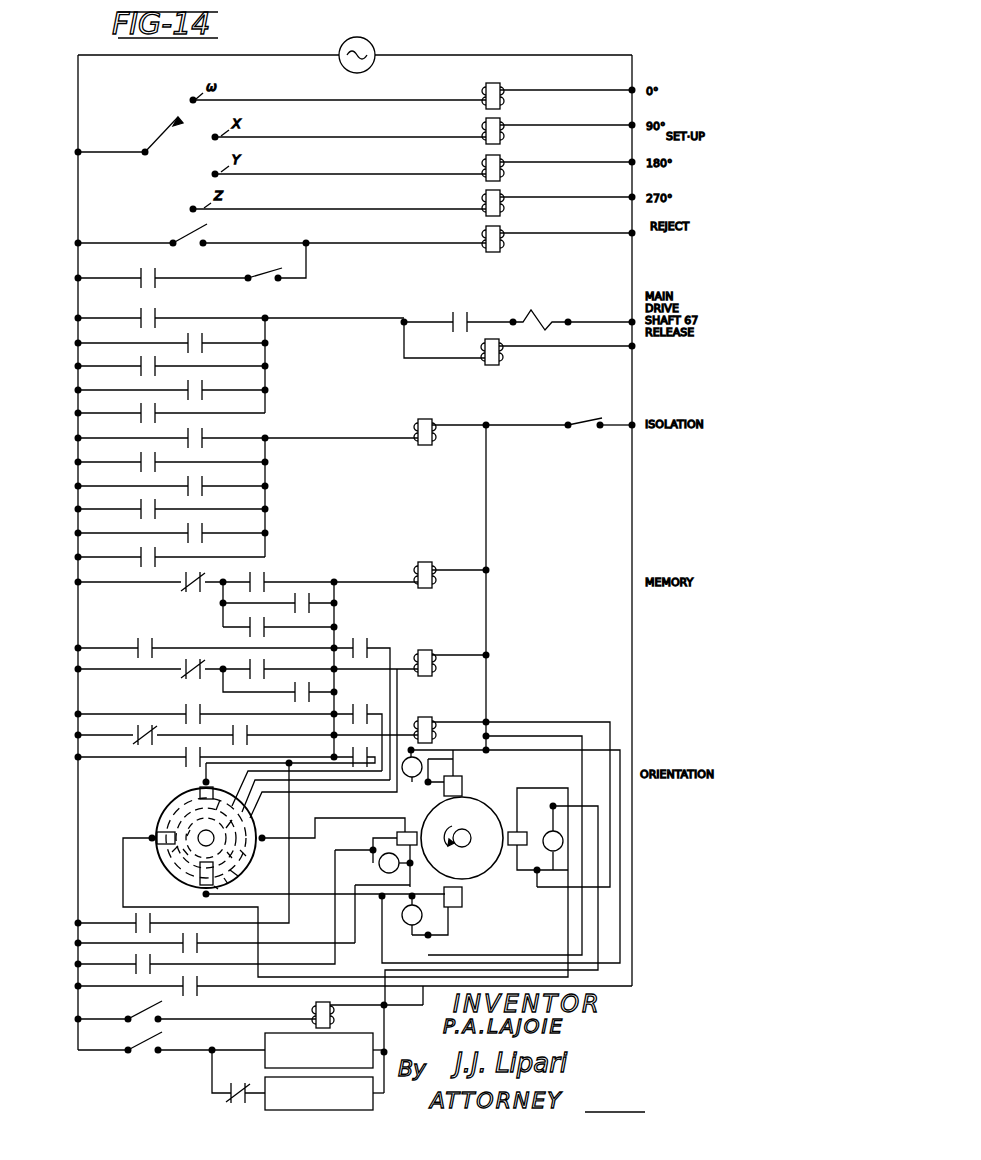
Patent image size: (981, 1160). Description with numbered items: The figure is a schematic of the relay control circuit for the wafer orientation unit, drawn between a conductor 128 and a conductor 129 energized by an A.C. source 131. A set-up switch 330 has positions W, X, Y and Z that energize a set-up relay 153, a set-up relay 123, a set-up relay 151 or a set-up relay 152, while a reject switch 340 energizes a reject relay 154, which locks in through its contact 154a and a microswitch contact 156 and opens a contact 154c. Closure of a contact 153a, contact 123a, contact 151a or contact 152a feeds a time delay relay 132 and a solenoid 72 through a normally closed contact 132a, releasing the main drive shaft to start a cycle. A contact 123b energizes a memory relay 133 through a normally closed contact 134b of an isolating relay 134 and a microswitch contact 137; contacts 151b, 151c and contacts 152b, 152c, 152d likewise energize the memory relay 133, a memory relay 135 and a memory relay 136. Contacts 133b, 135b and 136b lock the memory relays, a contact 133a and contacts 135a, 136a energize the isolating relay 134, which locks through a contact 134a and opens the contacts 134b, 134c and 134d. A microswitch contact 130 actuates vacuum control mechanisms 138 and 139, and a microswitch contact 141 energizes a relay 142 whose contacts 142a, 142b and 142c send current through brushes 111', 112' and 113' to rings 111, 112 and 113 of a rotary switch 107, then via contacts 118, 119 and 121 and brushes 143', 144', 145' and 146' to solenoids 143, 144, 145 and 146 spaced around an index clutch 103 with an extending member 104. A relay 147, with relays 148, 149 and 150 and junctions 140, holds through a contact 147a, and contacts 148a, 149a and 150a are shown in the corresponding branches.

The conductor 128 is at (78, 108).
The conductor 129 is at (634, 80).
The A.C. source 131 is at (352, 72).
The set-up switch 330 is at (184, 155).
The reject switch 340 is at (178, 229).
The contact 154a is at (148, 268).
The microswitch contact 156 is at (266, 274).
The set-up relay 153 is at (502, 84).
The set-up relay 123 is at (502, 120).
The set-up relay 151 is at (502, 156).
The set-up relay 152 is at (502, 192).
The reject relay 154 is at (502, 228).
The contact 153a is at (148, 309).
The contact 123a is at (205, 335).
The contact 151a is at (148, 357).
The contact 152a is at (199, 382).
The contact 154c is at (148, 406).
The contact 133a is at (199, 479).
The contact 134a is at (148, 500).
The contact 135a is at (199, 525).
The contact 136a is at (148, 549).
The contact 132a is at (460, 310).
The solenoid 72 is at (542, 318).
The time delay relay 132 is at (490, 366).
The isolating relay 134 is at (428, 419).
The microswitch contact 137 is at (585, 418).
The contact 134b is at (190, 594).
The contact 123b is at (258, 572).
The contact 151b is at (300, 598).
The contact 152b is at (257, 633).
The contact 133b is at (146, 636).
The contact 142a is at (358, 640).
The contact 134c is at (190, 680).
The contact 151c is at (252, 662).
The contact 152c is at (300, 698).
The contact 135b is at (197, 708).
The contact 142b is at (357, 703).
The contact 134d is at (134, 731).
The contact 152d is at (244, 730).
The contact 136b is at (186, 768).
The contact 142c is at (343, 754).
The memory relay 133 is at (427, 562).
The memory relay 135 is at (430, 650).
The memory relay 136 is at (430, 717).
The rotary switch 107 is at (150, 887).
The contact 118 is at (200, 786).
The contact 119 is at (152, 832).
The contact 121 is at (200, 890).
The ring 113 is at (332, 830).
The brush 113' is at (295, 785).
The brush 111' is at (316, 796).
The brush 112' is at (323, 745).
The brush 143' is at (234, 794).
The brush 146' is at (152, 854).
The brush 144' is at (267, 857).
The ring 111 is at (259, 872).
The ring 112 is at (255, 885).
The brush 145' is at (237, 894).
The index clutch 103 is at (472, 869).
The extending member 104 is at (478, 798).
The solenoid 143 is at (465, 773).
The solenoid 144 is at (376, 854).
The solenoid 145 is at (428, 914).
The solenoid 146 is at (530, 859).
The relay 147 is at (406, 778).
The orientation relay 148 is at (548, 832).
The orientation relay 149 is at (406, 925).
The orientation relay 150 is at (379, 866).
The conductor junction 140 is at (428, 790).
The contact 147a is at (140, 916).
The relay contact 150a is at (195, 938).
The relay contact 149a is at (140, 957).
The relay contact 148a is at (195, 980).
The microswitch contact 141 is at (142, 1004).
The relay 142 is at (318, 1002).
The microswitch contact 130 is at (140, 1042).
The vacuum control mechanism 138 is at (264, 1037).
The vacuum control mechanism 139 is at (264, 1078).